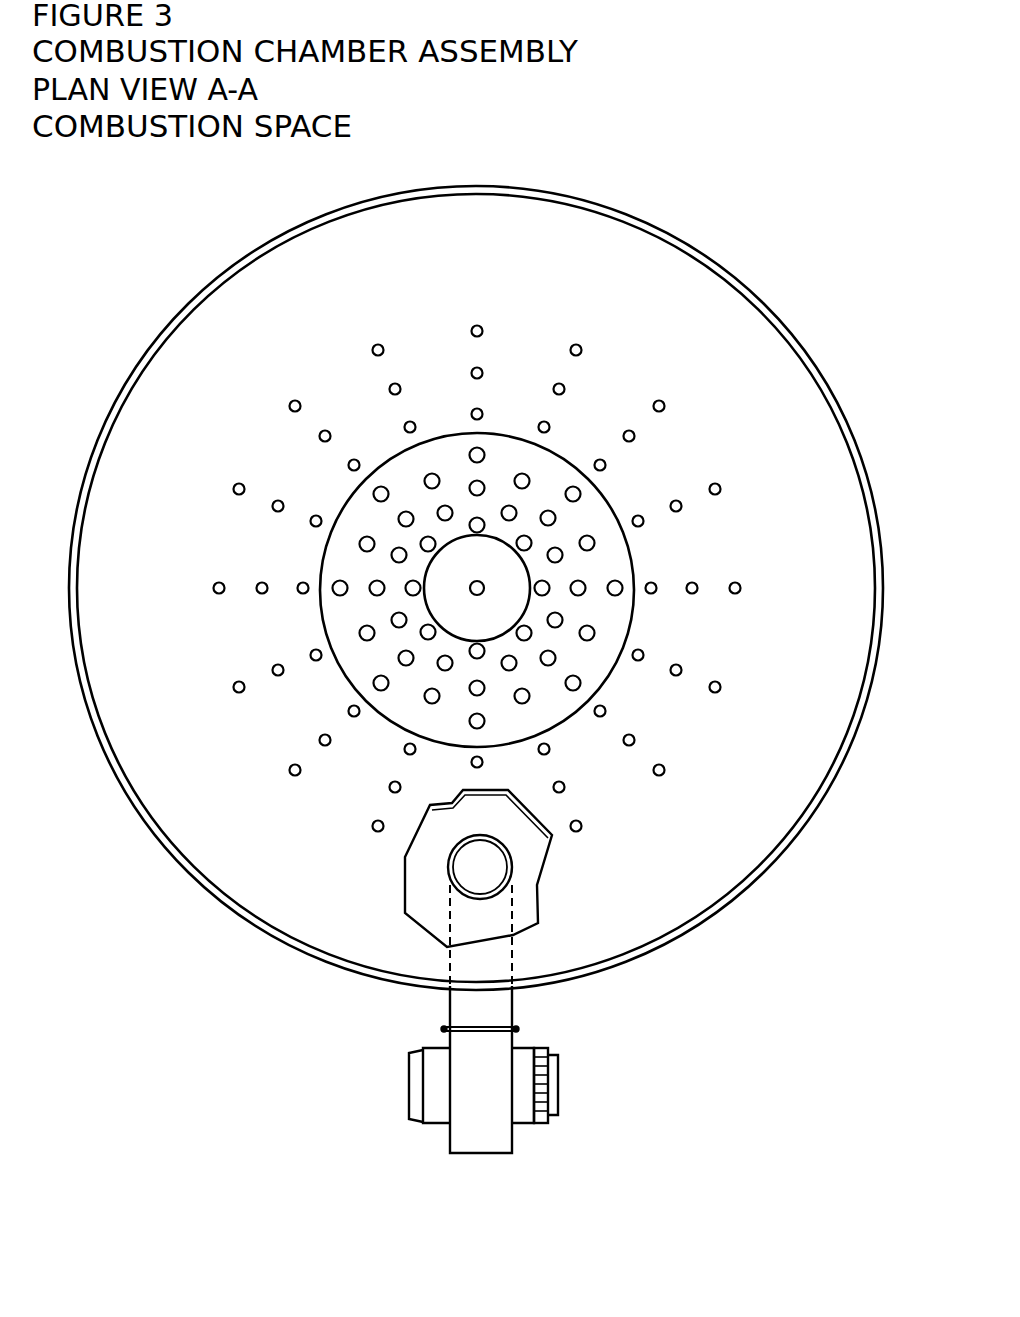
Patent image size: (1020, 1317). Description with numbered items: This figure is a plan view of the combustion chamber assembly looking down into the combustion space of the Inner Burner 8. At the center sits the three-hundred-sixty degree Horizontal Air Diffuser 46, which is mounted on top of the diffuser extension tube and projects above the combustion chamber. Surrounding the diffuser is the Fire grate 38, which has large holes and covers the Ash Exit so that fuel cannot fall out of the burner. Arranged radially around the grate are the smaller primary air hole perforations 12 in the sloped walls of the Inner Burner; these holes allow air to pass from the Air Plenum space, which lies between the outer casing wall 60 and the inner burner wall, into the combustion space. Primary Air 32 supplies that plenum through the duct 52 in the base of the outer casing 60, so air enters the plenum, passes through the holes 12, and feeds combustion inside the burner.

The Inner Burner 8 is at (610, 296).
The holes 12 is at (232, 497).
The Primary Air 32 is at (562, 1081).
The Fire grate 38 is at (457, 478).
The Horizontal Air Diffuser 46 is at (488, 556).
The duct 52 is at (462, 1011).
The outer casing wall 60 is at (787, 323).